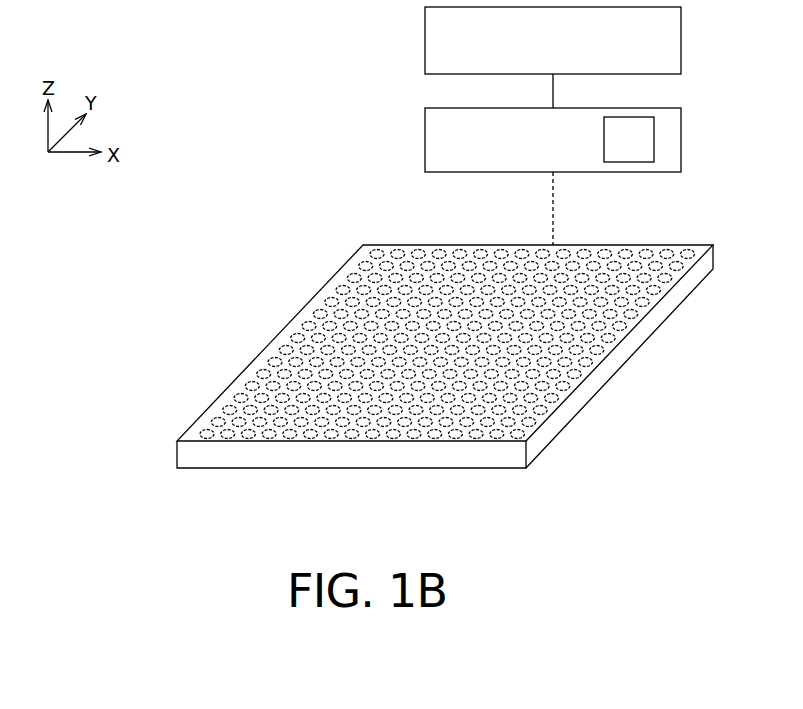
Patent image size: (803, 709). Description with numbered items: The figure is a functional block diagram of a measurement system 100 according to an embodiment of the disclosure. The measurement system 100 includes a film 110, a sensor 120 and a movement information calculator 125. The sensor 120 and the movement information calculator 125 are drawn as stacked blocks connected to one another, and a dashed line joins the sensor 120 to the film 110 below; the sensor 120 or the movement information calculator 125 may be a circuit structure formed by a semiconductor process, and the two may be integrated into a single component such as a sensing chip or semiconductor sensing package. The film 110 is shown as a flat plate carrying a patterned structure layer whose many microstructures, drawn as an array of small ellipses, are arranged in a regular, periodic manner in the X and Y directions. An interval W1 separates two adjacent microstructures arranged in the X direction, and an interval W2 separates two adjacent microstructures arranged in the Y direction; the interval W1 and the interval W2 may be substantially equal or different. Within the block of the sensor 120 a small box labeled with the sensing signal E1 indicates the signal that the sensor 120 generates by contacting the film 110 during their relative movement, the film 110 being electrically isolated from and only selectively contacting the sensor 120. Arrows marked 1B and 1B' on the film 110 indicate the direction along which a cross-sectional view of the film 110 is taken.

The measurement system 100 is at (394, 90).
The film 110 is at (507, 458).
The sensor 120 is at (578, 152).
The movement information calculator 125 is at (630, 66).
The sensing signal E1 is at (629, 139).
The interval between adjacent microstructures in the X direction W1 is at (262, 441).
The interval between adjacent microstructures in the Y direction W2 is at (244, 386).
The section direction end point 1B is at (151, 477).
The section direction end point 1B' is at (285, 478).